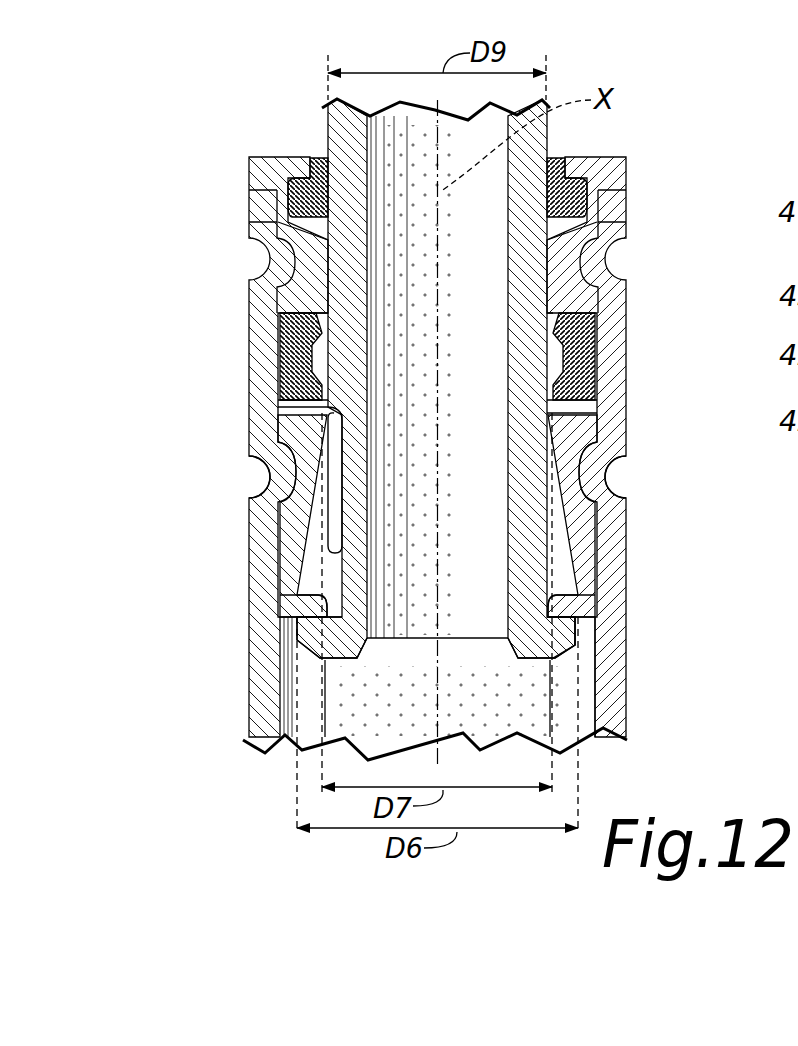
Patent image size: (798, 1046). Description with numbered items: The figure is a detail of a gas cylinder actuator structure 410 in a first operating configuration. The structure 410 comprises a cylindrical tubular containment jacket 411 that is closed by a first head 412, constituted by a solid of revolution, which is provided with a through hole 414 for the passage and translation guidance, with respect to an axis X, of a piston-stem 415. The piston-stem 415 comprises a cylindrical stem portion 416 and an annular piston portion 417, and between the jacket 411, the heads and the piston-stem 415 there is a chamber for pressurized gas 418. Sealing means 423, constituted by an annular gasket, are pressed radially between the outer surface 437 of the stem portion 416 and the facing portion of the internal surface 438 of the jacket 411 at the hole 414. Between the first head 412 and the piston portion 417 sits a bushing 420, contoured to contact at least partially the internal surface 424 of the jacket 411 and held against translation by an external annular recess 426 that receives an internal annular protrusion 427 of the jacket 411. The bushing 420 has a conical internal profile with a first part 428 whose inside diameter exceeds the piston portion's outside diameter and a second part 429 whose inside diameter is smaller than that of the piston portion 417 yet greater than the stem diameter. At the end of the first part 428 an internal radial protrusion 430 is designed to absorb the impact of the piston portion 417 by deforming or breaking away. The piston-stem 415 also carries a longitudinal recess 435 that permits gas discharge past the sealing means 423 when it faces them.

The structure 410 is at (442, 414).
The tubular containment jacket 411 is at (620, 530).
The first head 412 is at (623, 161).
The through hole 414 is at (324, 238).
The piston-stem 415 is at (548, 143).
The stem portion 416 is at (330, 125).
The piston portion 417 is at (337, 645).
The chamber for pressurized gas 418 is at (568, 708).
The bushing 420 is at (291, 541).
The sealing means 423 is at (290, 349).
The internal surface 424 is at (595, 695).
The external annular recess 426 is at (588, 442).
The internal annular protrusion 427 is at (600, 472).
The first part 428 is at (587, 592).
The second part 429 is at (270, 445).
The internal radial protrusion 430 is at (305, 608).
The longitudinal recess 435 is at (336, 404).
The outer surface 437 is at (281, 315).
The internal surface 438 is at (602, 348).